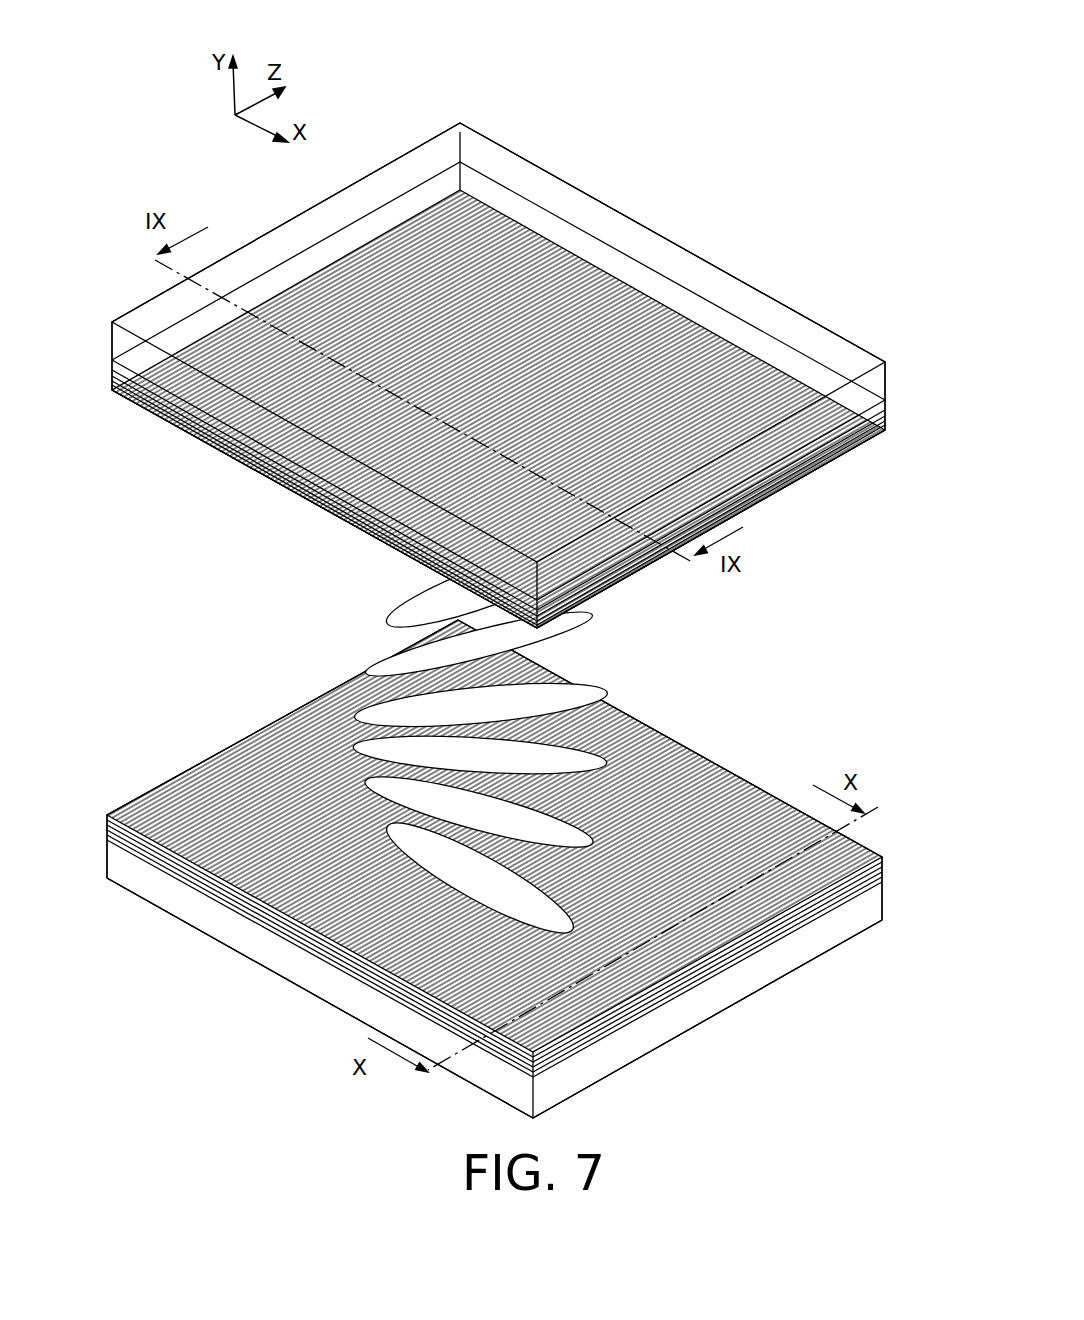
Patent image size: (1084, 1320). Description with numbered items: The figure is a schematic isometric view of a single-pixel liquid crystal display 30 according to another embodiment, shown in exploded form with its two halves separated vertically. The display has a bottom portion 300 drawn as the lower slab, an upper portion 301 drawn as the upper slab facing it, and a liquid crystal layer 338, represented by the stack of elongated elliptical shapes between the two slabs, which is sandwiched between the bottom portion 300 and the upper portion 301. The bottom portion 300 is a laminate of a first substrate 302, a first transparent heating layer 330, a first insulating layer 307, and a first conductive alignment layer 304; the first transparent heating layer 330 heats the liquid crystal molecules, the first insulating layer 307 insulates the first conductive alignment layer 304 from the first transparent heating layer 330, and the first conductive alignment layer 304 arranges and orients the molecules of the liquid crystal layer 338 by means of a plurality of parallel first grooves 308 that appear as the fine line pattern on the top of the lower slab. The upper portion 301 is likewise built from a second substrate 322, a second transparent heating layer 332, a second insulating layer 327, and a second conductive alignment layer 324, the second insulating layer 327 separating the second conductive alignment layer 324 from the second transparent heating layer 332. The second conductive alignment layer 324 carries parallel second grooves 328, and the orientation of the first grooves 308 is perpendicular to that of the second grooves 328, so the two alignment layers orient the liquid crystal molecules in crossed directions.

The single-pixel liquid crystal display 30 is at (544, 80).
The bottom portion 300 is at (218, 956).
The upper portion 301 is at (697, 199).
The first substrate 302 is at (677, 1008).
The first conductive alignment layer 304 is at (814, 900).
The first insulating layer 307 is at (213, 890).
The first grooves 308 is at (723, 797).
The second substrate 322 is at (130, 355).
The second conductive alignment layer 324 is at (208, 440).
The second insulating layer 327 is at (886, 408).
The second grooves 328 is at (292, 490).
The first transparent heating layer 330 is at (278, 928).
The second transparent heating layer 332 is at (377, 538).
The liquid crystal layer 338 is at (593, 616).